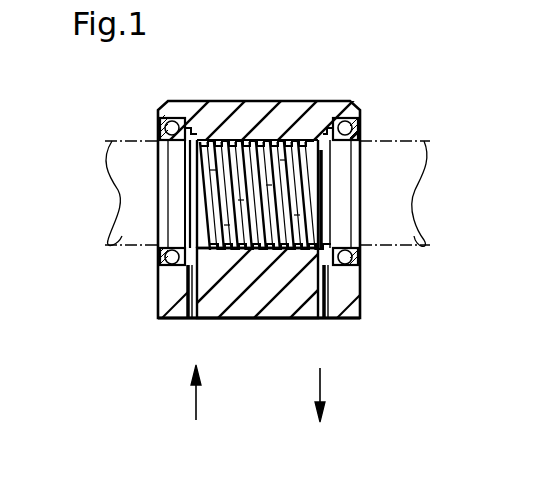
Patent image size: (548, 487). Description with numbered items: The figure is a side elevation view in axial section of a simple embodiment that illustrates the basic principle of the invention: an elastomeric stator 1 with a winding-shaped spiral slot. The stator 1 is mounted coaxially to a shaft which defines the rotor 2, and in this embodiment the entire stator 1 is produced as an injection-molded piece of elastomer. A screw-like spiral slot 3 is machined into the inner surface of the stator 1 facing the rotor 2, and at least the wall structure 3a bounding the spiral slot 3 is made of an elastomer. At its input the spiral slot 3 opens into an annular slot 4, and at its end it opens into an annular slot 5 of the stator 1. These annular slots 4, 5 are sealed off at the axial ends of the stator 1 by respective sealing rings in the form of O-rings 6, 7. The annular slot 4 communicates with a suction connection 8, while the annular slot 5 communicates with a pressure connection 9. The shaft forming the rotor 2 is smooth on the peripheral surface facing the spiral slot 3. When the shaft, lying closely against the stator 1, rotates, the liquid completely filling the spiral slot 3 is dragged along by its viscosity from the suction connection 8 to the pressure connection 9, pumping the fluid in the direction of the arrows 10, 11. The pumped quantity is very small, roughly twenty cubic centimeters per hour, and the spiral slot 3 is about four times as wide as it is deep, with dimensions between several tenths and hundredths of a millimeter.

The stator 1 is at (360, 310).
The rotor 2 is at (137, 236).
The spiral slot 3 is at (302, 142).
The wall structure 3a is at (247, 142).
The annular slot 4 is at (190, 128).
The annular slot 5 is at (323, 167).
The sealing ring 6 is at (170, 262).
The sealing ring 7 is at (348, 257).
The suction connection 8 is at (190, 320).
The pressure connection 9 is at (322, 318).
The arrow 10 is at (196, 405).
The arrow 11 is at (322, 380).